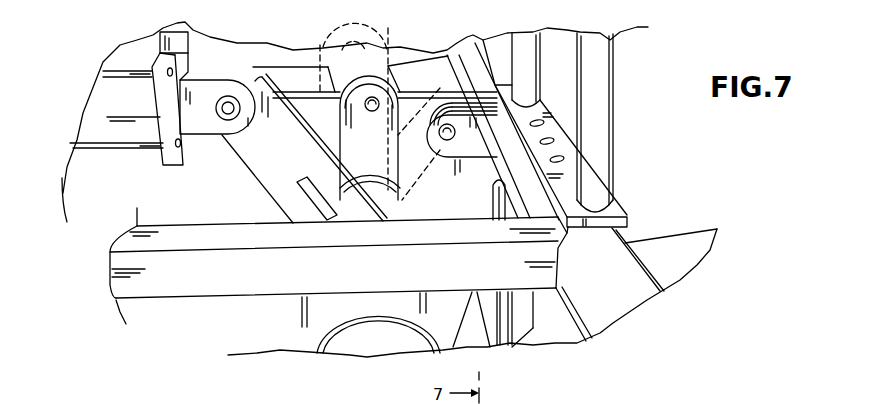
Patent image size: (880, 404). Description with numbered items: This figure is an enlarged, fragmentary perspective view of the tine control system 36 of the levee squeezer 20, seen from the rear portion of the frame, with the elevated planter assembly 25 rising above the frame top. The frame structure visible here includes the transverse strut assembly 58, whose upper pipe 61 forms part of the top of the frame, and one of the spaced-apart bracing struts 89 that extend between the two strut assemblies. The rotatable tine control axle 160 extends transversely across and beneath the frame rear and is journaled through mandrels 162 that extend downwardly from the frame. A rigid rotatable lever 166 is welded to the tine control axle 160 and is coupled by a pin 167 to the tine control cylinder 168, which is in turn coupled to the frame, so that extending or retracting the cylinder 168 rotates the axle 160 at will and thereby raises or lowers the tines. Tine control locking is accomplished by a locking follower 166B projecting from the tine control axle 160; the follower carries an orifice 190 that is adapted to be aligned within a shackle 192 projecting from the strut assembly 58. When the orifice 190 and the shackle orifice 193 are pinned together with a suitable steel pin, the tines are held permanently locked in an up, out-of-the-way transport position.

The levee squeezer 20 is at (268, 303).
The elevated planter assembly 25 is at (620, 107).
The tine control system 36 is at (268, 55).
The strut assembly 58 is at (533, 343).
The pipe 61 is at (621, 270).
The bracing struts 89 is at (245, 275).
The tine control axle 160 is at (408, 343).
The mandrels 162 is at (361, 309).
The rotatable lever 166 is at (318, 149).
The locking follower 166B is at (393, 150).
The pin 167 is at (233, 103).
The tine control cylinder 168 is at (138, 105).
The orifice 190 is at (370, 104).
The shackle 192 is at (496, 146).
The orifice 193 is at (447, 124).